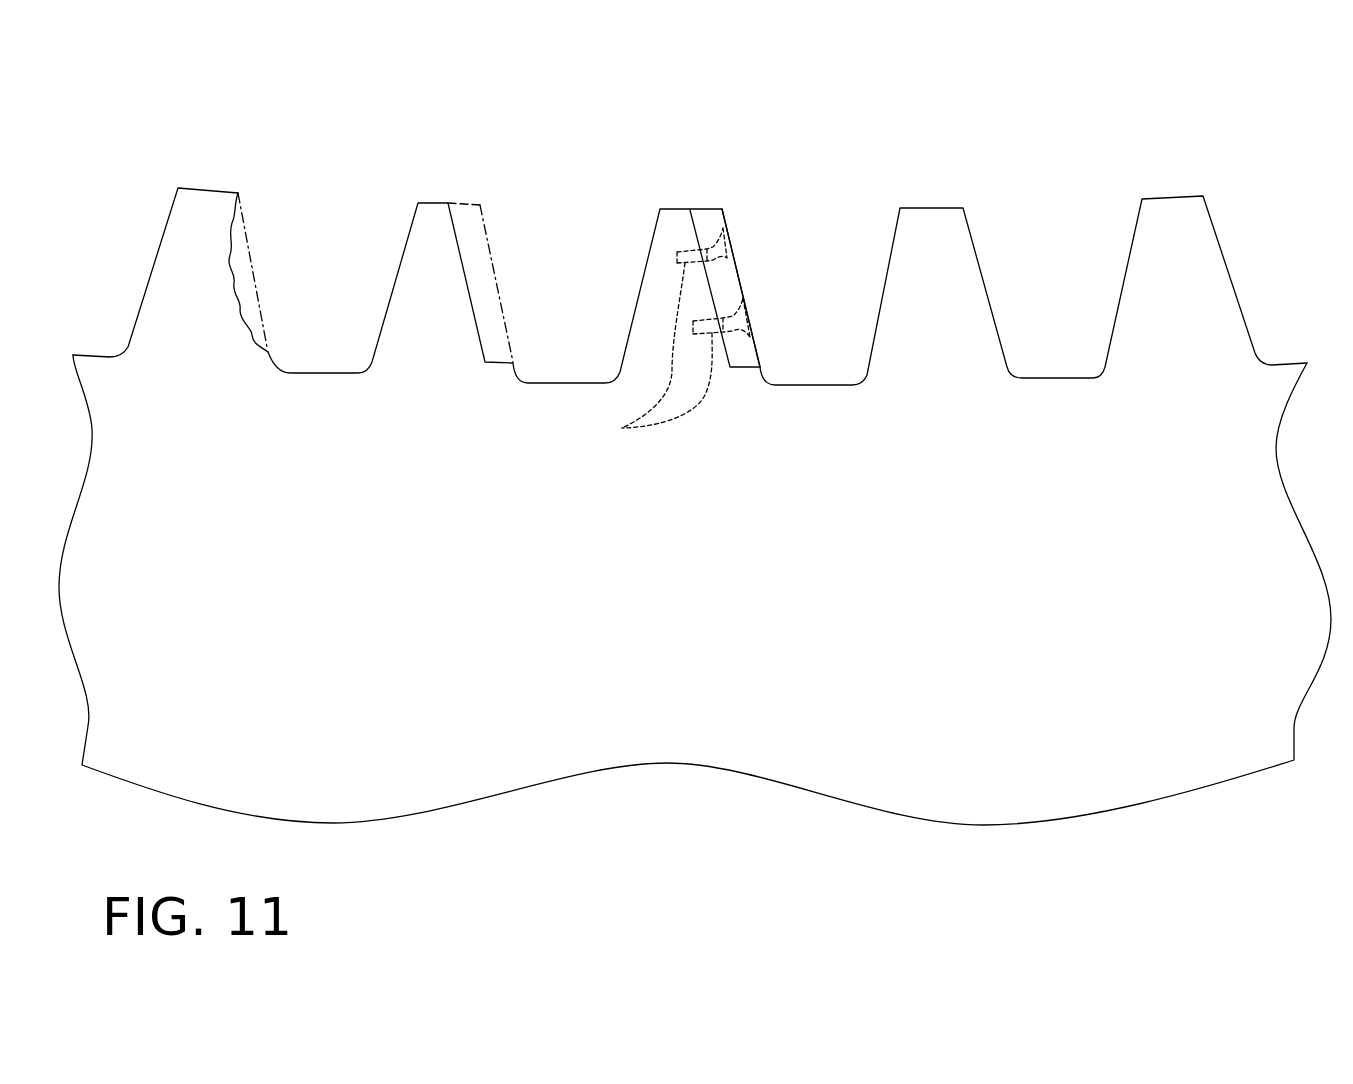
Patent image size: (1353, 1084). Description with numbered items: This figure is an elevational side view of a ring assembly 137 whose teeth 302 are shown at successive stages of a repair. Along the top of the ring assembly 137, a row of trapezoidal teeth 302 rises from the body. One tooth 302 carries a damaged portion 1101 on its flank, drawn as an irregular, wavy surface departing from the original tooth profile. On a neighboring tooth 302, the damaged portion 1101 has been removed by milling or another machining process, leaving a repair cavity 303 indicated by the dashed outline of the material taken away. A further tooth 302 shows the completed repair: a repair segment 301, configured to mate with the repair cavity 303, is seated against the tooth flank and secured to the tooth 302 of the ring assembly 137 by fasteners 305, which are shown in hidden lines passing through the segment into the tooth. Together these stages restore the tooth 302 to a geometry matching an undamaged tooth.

The ring assembly 137 is at (686, 568).
The tooth 302 is at (158, 188).
The damaged portion 1101 is at (263, 236).
The repair cavity 303 is at (470, 223).
The repair segment 301 is at (723, 285).
The fasteners 305 is at (630, 427).